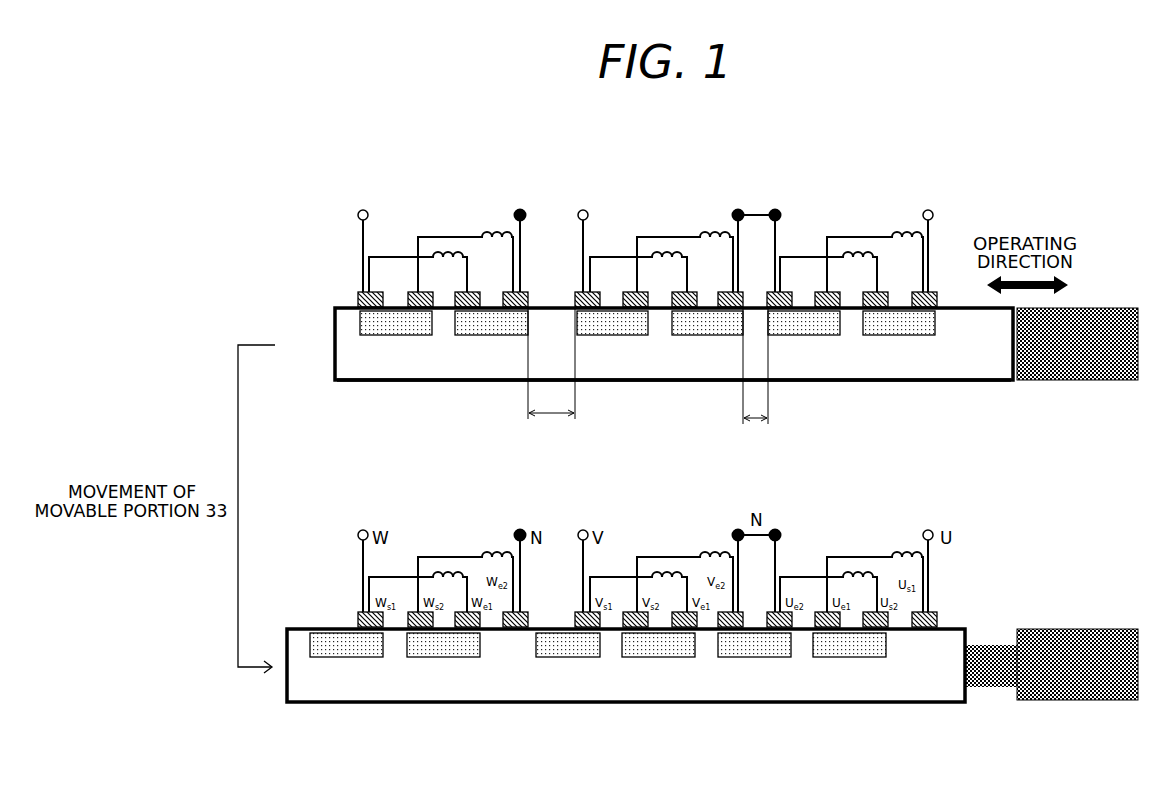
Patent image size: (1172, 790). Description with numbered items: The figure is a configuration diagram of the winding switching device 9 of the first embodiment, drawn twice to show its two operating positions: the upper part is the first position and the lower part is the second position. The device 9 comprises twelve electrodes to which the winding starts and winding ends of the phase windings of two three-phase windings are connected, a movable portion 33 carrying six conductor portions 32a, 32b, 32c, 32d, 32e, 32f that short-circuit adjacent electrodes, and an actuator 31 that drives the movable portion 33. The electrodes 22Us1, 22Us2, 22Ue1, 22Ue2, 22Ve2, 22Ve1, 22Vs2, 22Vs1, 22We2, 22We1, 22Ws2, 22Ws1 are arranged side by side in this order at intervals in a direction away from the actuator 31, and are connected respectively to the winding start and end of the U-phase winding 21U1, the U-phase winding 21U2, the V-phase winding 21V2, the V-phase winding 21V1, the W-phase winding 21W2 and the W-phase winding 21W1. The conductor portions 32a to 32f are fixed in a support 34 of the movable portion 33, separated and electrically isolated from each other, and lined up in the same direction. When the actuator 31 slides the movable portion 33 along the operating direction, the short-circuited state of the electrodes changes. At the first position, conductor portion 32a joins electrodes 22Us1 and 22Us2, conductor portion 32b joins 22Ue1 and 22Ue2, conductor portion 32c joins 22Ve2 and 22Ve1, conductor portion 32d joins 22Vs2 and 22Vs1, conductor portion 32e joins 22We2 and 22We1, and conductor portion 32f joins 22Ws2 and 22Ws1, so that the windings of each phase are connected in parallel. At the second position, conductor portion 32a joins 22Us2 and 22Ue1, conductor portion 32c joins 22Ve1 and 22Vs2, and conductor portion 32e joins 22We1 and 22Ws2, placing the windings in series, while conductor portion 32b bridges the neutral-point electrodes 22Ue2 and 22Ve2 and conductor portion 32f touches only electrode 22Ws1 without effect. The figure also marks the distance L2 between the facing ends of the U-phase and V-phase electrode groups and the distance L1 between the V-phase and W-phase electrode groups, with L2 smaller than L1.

The winding switching device 9 is at (468, 153).
The W-phase winding 21W1 is at (440, 250).
The W-phase winding 21W2 is at (488, 231).
The V-phase winding 21V1 is at (658, 250).
The V-phase winding 21V2 is at (707, 231).
The U-phase winding 21U1 is at (893, 231).
The U-phase winding 21U2 is at (853, 250).
The electrode 22Ws1 is at (367, 315).
The electrode 22Ws2 is at (423, 315).
The electrode 22We1 is at (462, 315).
The electrode 22We2 is at (518, 315).
The electrode 22Vs1 is at (585, 315).
The electrode 22Vs2 is at (633, 315).
The electrode 22Ve1 is at (685, 315).
The electrode 22Ve2 is at (730, 315).
The electrode 22Ue1 is at (830, 315).
The electrode 22Ue2 is at (780, 315).
The electrode 22Us1 is at (928, 315).
The electrode 22Us2 is at (877, 315).
The actuator 31 is at (1103, 308).
The conductor portion 32a is at (895, 337).
The conductor portion 32b is at (800, 337).
The conductor portion 32c is at (672, 337).
The conductor portion 32d is at (602, 337).
The conductor portion 32e is at (478, 337).
The conductor portion 32f is at (377, 337).
The movable portion 33 is at (335, 327).
The support 34 is at (477, 372).
The distance L1 is at (551, 363).
The distance L2 is at (755, 366).